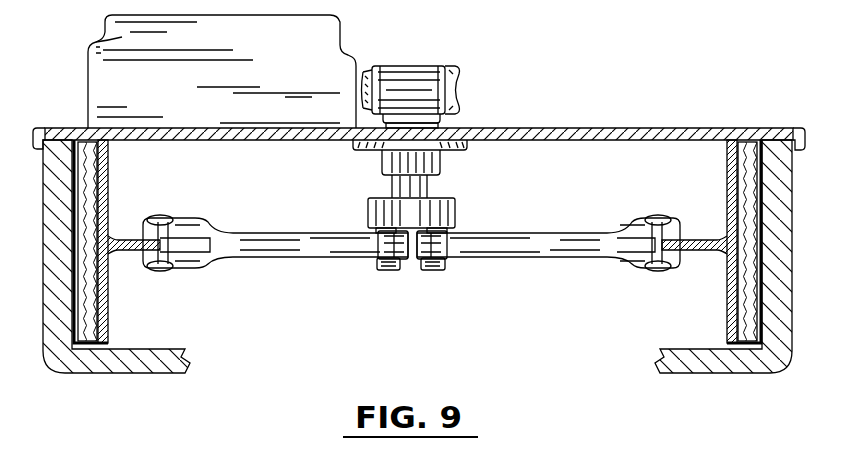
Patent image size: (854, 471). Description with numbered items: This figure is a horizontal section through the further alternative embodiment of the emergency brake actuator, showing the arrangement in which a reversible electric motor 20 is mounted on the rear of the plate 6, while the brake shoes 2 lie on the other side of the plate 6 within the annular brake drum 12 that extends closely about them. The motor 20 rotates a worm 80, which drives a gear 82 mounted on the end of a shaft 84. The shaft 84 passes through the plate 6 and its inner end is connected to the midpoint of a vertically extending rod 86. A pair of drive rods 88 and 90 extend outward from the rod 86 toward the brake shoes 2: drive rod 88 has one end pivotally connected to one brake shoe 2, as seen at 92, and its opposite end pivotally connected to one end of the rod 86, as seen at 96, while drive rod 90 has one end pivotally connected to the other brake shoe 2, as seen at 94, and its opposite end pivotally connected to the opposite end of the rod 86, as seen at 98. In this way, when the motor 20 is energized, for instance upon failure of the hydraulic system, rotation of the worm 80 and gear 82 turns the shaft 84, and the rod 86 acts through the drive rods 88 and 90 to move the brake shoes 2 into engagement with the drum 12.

The brake shoes 2 is at (110, 306).
The plate 6 is at (612, 131).
The brake drum 12 is at (102, 374).
The reversible electric motor 20 is at (88, 80).
The worm 80 is at (408, 82).
The gear 82 is at (462, 78).
The shaft 84 is at (430, 186).
The vertically extending rod 86 is at (457, 216).
The drive rod 88 is at (315, 258).
The drive rod 90 is at (526, 260).
The pivotal connection 92 is at (171, 217).
The pivotal connection 94 is at (672, 278).
The pivotal connection 96 is at (390, 272).
The pivotal connection 98 is at (445, 272).